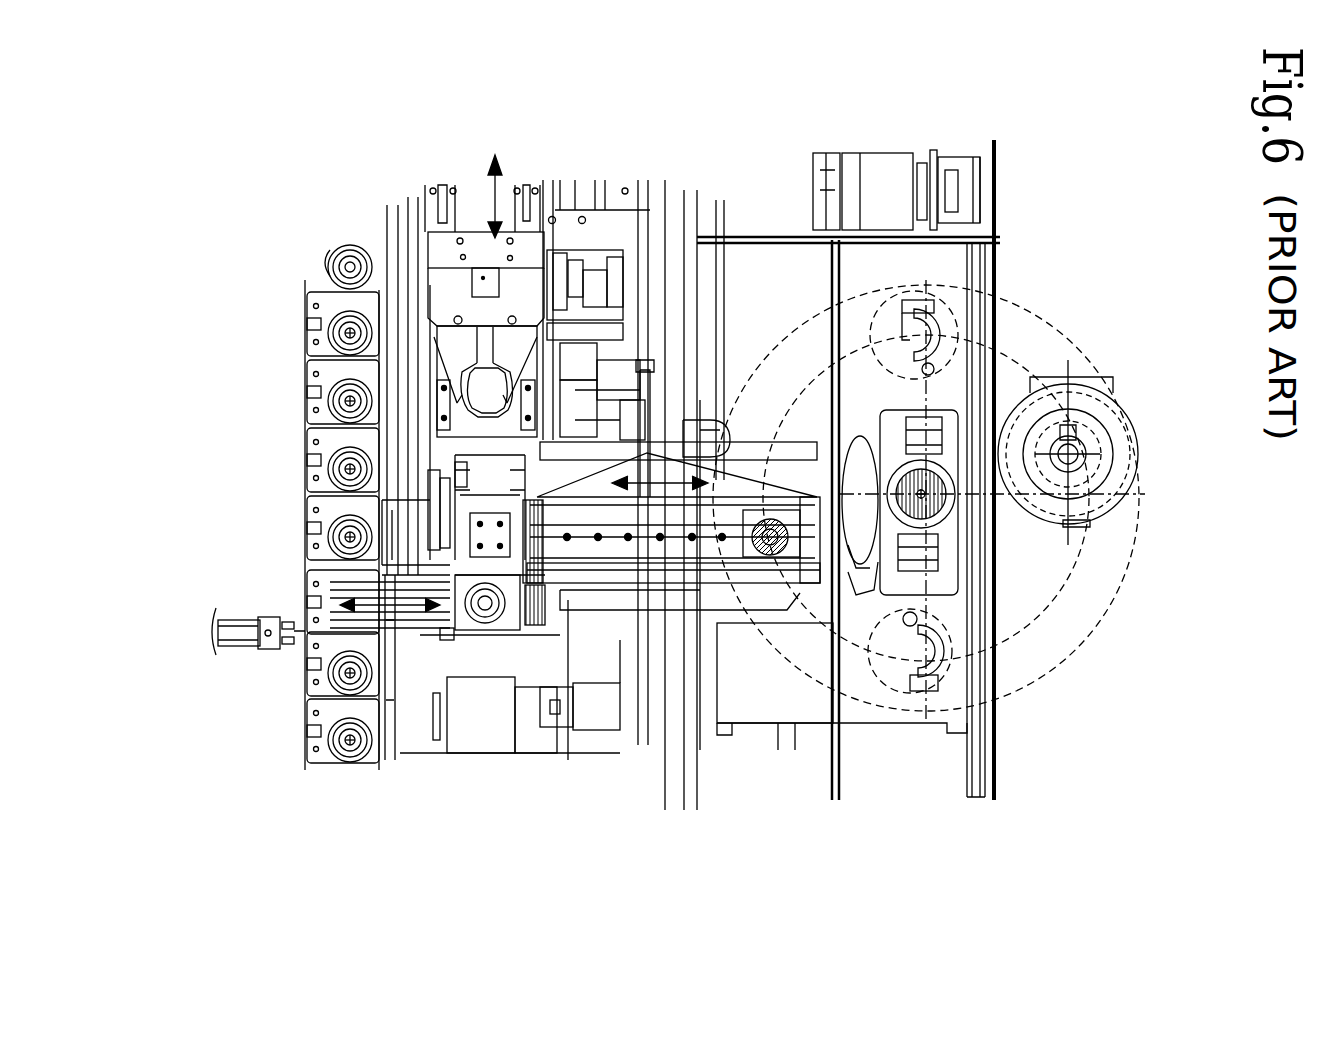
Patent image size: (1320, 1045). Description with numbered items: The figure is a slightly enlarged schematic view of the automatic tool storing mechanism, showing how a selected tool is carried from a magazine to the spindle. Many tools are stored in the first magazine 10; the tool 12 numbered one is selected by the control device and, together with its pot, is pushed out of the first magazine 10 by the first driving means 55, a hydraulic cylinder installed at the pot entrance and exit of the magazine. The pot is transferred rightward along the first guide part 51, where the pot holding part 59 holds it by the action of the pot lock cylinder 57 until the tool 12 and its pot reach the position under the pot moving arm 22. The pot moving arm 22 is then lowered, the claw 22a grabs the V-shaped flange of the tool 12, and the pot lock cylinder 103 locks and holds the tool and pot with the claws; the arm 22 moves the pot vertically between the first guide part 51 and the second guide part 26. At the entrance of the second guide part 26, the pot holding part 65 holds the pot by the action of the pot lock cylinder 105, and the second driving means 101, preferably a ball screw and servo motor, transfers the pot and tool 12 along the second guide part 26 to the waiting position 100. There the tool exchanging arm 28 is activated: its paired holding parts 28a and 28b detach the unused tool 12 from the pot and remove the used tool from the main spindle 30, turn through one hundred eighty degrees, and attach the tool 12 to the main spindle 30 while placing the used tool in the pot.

The first magazine 10 is at (270, 490).
The tool 12 is at (486, 648).
The pot moving arm 22 is at (450, 357).
The claw 22a is at (446, 287).
The second guide part 26 is at (673, 580).
The tool exchanging arm 28 is at (956, 399).
The holding part 28a is at (938, 690).
The holding part 28b is at (905, 340).
The main spindle 30 is at (1145, 407).
The first guide part 51 is at (349, 630).
The first driving means 55 is at (215, 655).
The pot lock cylinder 57 is at (543, 644).
The pot holding part 59 is at (444, 648).
The pot holding part 65 is at (436, 518).
The waiting position 100 is at (768, 497).
The second driving means 101 is at (480, 512).
The pot lock cylinder 103 is at (467, 257).
The pot lock cylinder 105 is at (545, 514).